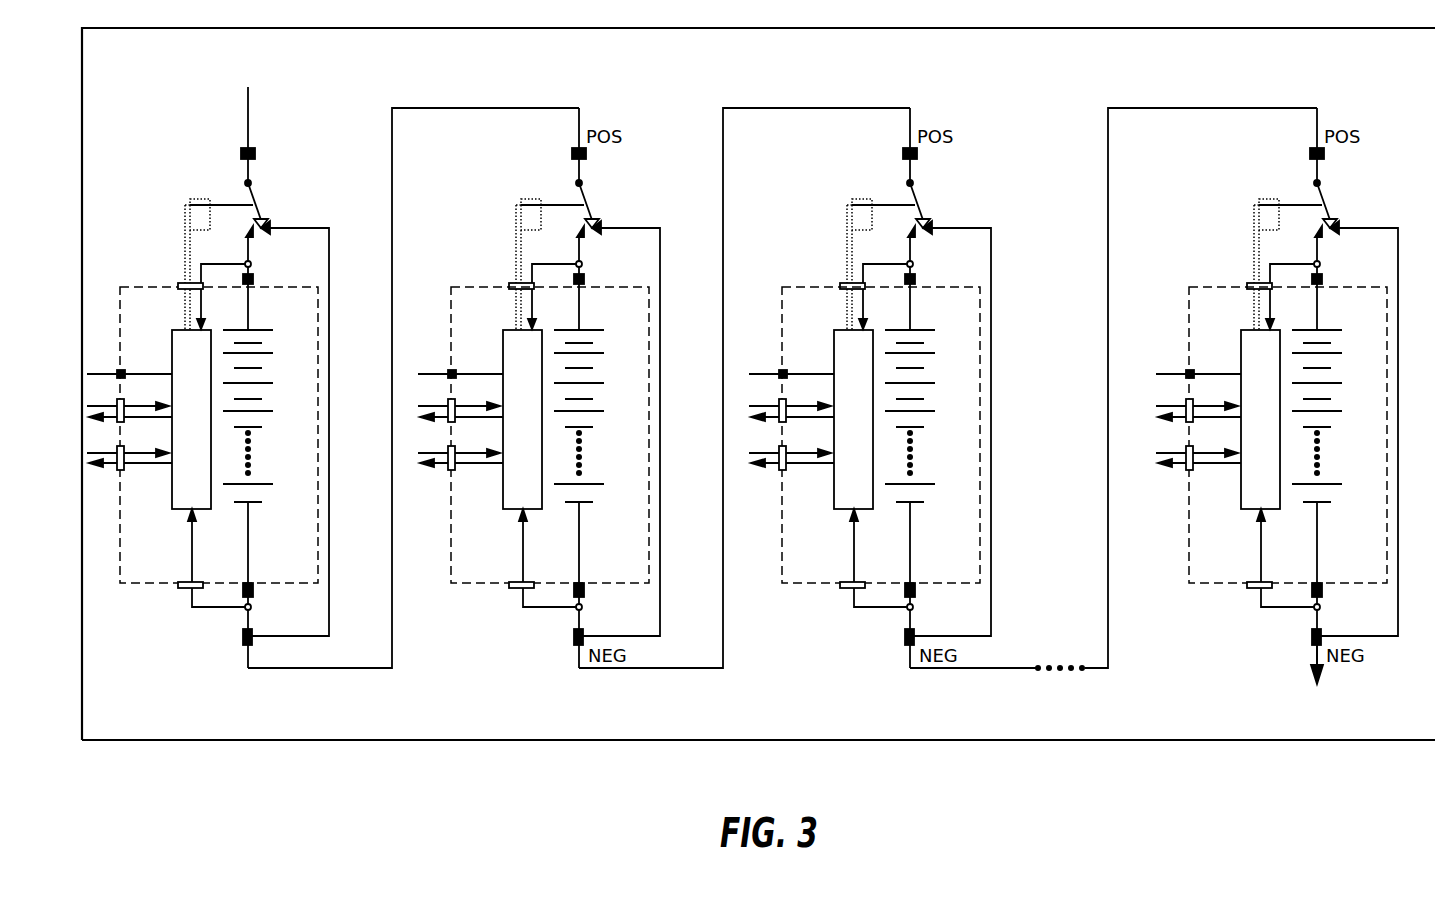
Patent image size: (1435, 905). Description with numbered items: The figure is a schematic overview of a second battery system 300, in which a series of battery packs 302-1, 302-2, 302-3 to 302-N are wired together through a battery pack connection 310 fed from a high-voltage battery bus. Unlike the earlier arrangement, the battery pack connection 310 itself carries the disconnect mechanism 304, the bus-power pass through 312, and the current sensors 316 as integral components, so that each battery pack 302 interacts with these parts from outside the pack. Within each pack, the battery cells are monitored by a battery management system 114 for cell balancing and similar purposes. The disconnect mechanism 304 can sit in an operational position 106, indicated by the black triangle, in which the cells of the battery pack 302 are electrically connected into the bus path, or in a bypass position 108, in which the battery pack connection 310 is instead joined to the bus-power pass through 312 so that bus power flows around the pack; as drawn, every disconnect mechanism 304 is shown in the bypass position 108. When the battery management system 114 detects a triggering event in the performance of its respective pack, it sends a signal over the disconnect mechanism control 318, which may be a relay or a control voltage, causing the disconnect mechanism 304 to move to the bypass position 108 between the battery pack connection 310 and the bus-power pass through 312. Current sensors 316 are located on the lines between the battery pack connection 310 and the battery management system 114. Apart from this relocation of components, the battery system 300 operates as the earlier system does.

The battery system 300 is at (1423, 69).
The battery pack connection 310 is at (248, 117).
The disconnect mechanism 304 is at (248, 197).
The bypass position 108 is at (268, 222).
The operational position 106 is at (247, 232).
The disconnect mechanism control 318 is at (185, 237).
The bus-power pass through 312 is at (329, 283).
The current sensors 316 is at (203, 296).
The battery pack 302-1 is at (310, 318).
The battery pack 302-2 is at (641, 318).
The battery pack 302-3 is at (972, 318).
The battery pack 302-N is at (1379, 318).
The battery management system 114 is at (177, 365).
The battery pack 302 is at (278, 354).